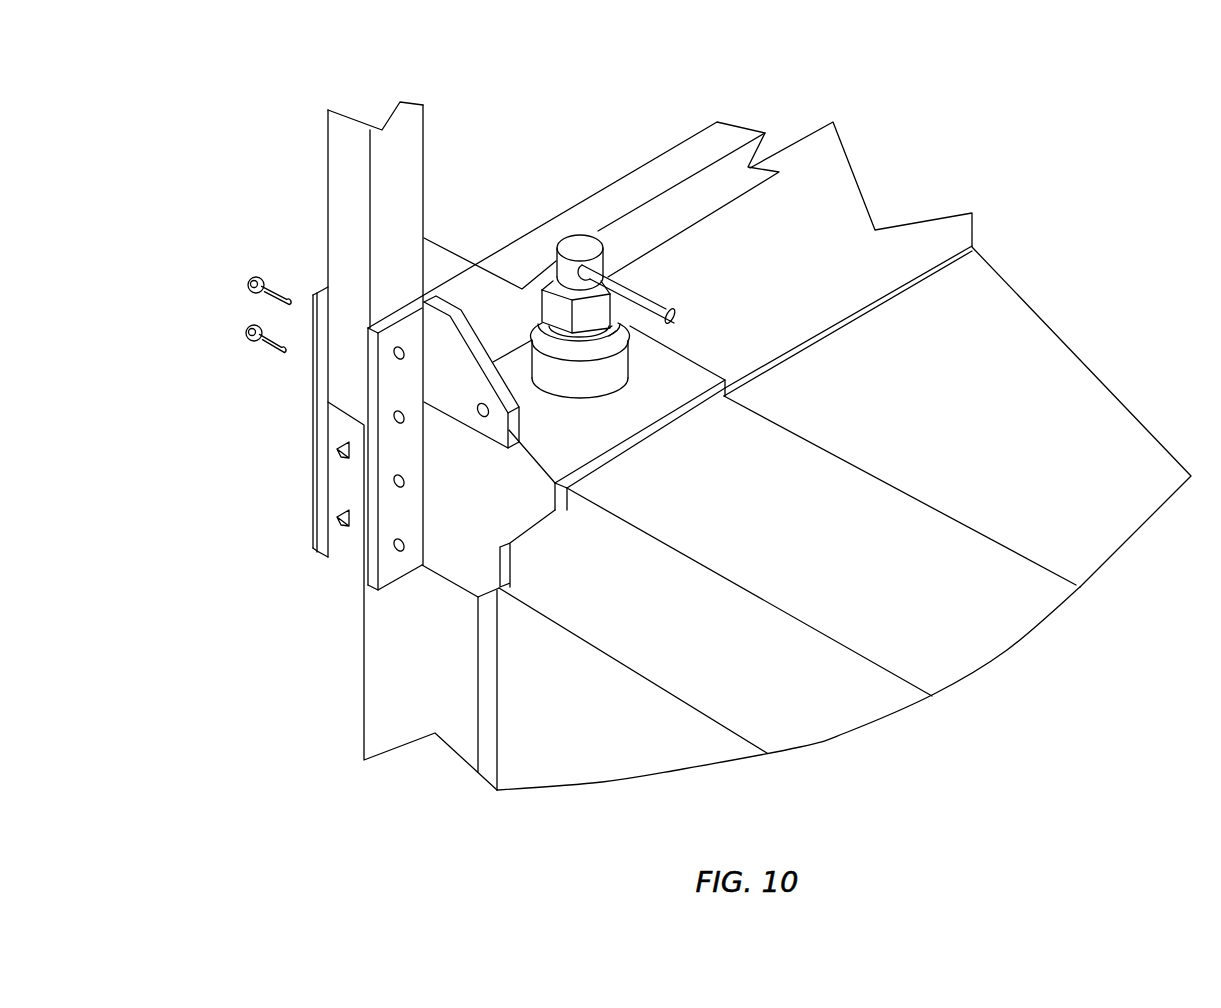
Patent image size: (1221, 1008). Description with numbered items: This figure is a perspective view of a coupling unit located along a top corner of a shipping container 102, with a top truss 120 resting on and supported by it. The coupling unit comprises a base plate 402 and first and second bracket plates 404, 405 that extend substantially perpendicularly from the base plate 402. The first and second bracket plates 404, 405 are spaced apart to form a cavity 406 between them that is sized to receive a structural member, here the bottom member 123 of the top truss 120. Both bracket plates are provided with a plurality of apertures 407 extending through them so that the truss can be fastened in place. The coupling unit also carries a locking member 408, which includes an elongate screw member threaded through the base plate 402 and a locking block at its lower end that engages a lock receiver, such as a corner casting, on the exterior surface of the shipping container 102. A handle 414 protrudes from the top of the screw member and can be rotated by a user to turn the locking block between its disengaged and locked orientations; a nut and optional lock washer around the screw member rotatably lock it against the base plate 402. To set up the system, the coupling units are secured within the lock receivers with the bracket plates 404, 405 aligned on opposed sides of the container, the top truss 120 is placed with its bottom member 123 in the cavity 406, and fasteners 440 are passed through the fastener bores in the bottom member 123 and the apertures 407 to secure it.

The shipping container 102 is at (807, 669).
The top truss 120 is at (294, 211).
The bottom member 123 is at (646, 174).
The base plate 402 is at (560, 460).
The first bracket plate 404 is at (322, 458).
The second bracket plate 405 is at (375, 500).
The cavity 406 is at (347, 554).
The apertures 407 is at (397, 412).
The locking member 408 is at (577, 237).
The handle 414 is at (683, 318).
The fasteners 440 is at (249, 282).